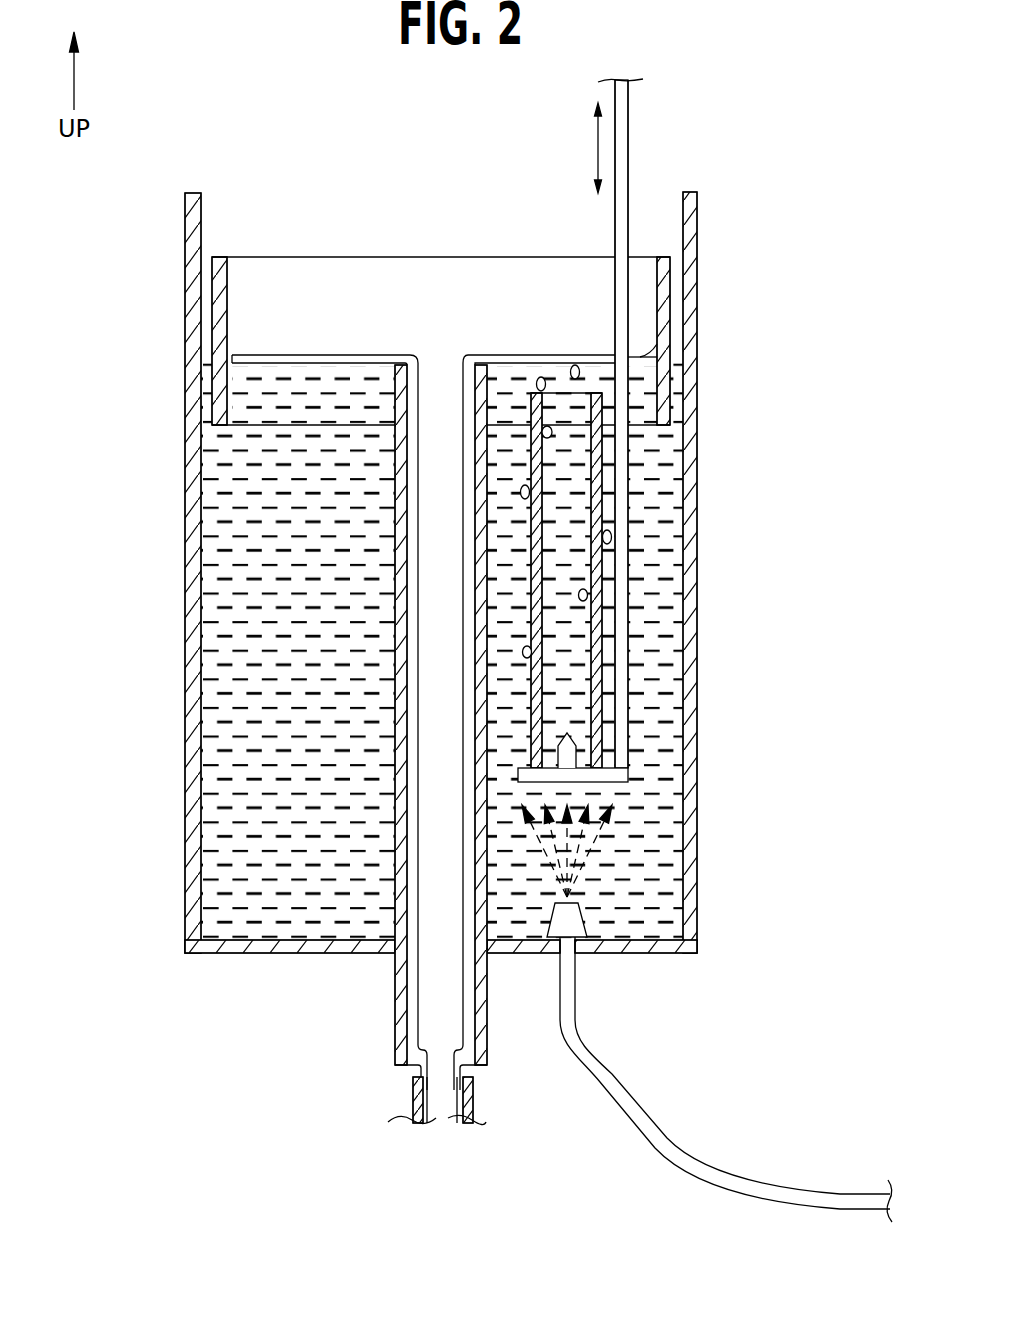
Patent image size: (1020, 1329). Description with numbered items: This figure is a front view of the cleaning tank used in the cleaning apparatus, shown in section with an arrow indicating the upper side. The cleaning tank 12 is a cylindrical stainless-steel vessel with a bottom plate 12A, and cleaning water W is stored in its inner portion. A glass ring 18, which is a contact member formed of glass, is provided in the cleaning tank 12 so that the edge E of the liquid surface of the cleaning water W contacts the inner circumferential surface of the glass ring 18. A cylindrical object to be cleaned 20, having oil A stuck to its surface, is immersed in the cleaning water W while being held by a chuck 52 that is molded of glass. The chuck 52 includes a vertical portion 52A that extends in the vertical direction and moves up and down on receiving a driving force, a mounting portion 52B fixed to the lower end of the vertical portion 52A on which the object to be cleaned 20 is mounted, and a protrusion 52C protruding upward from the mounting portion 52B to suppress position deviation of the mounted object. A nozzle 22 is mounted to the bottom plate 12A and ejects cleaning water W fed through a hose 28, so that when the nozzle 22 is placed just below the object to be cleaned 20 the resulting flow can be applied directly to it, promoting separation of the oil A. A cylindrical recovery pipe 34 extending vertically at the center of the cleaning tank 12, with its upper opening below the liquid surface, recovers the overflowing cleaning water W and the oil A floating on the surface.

The cleaning tank 12 is at (697, 430).
The bottom plate 12A is at (282, 955).
The glass ring 18 is at (227, 283).
The object to be cleaned 20 is at (602, 640).
The nozzle 22 is at (587, 920).
The hose 28 is at (693, 1155).
The recovery pipe 34 is at (395, 725).
The chuck 52 is at (636, 157).
The vertical portion 52A is at (630, 105).
The mounting portion 52B is at (600, 782).
The protrusion 52C is at (575, 752).
The oil A is at (521, 355).
The edge of the liquid surface E is at (228, 347).
The cleaning water W is at (247, 613).